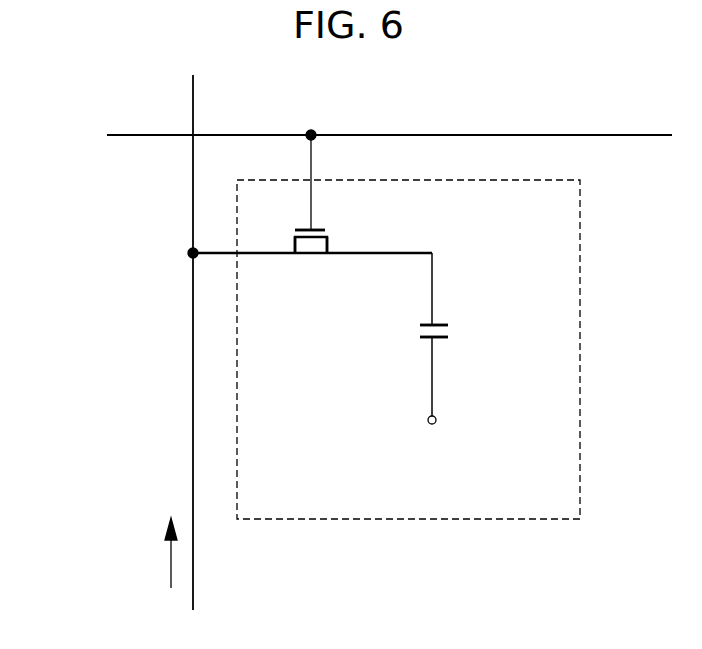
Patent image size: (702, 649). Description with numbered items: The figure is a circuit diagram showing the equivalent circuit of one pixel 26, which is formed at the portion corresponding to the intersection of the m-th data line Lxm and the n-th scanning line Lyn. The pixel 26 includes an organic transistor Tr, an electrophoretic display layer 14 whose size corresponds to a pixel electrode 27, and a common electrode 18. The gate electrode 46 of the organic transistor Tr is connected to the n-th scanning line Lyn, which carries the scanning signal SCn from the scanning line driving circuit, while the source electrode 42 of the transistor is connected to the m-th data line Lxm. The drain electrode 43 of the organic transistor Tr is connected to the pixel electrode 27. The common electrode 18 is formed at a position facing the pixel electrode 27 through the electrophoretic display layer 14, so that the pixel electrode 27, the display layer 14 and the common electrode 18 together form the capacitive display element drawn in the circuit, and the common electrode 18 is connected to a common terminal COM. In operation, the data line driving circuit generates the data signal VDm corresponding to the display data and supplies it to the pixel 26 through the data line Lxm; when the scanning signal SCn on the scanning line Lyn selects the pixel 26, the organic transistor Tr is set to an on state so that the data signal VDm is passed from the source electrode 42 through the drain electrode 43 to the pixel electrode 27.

The electrophoretic display layer 14 is at (480, 328).
The common electrode 18 is at (446, 339).
The pixel 26 is at (540, 519).
The pixel electrode 27 is at (448, 325).
The source electrode 42 is at (298, 256).
The drain electrode 43 is at (325, 256).
The gate electrode 46 is at (295, 230).
The organic transistor Tr is at (338, 227).
The scanning signal SCn is at (365, 135).
The n-th scanning line Lyn is at (137, 138).
The m-th data line Lxm is at (195, 590).
The data signal VDm is at (144, 553).
The common terminal COM is at (436, 420).